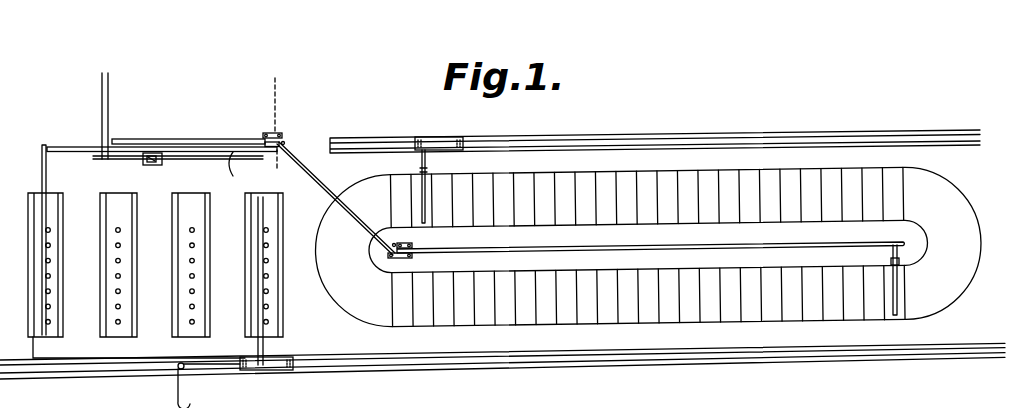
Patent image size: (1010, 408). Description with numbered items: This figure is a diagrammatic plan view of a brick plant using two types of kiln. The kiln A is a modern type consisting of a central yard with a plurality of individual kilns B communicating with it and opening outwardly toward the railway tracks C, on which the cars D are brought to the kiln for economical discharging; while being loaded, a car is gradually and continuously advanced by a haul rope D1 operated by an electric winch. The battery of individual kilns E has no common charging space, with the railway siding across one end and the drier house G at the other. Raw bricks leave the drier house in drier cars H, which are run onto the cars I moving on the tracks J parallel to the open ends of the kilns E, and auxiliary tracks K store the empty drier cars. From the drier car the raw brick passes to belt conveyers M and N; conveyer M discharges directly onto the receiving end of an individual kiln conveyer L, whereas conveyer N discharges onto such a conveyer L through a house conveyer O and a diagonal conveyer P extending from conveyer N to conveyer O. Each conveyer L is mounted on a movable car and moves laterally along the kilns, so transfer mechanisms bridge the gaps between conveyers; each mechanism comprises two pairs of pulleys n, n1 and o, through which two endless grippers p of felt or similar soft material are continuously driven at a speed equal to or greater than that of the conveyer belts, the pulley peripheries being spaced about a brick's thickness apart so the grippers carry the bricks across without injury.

The kiln A is at (650, 241).
The individual kilns B is at (648, 197).
The railway tracks C is at (617, 137).
The cars D is at (446, 145).
The haul rope D1 is at (212, 365).
The battery of individual kilns E is at (55, 292).
The drier house G is at (155, 103).
The drier cars H is at (163, 163).
The cars I is at (149, 165).
The tracks J is at (236, 173).
The auxiliary tracks K is at (102, 103).
The individual kiln conveyer L is at (41, 177).
The belt conveyer M is at (61, 152).
The belt conveyer N is at (266, 133).
The house conveyer O is at (497, 252).
The diagonal conveyer P is at (322, 182).
The pulley n is at (413, 246).
The pulley n1 is at (284, 143).
The pulley o is at (270, 134).
The endless gripper p is at (280, 133).